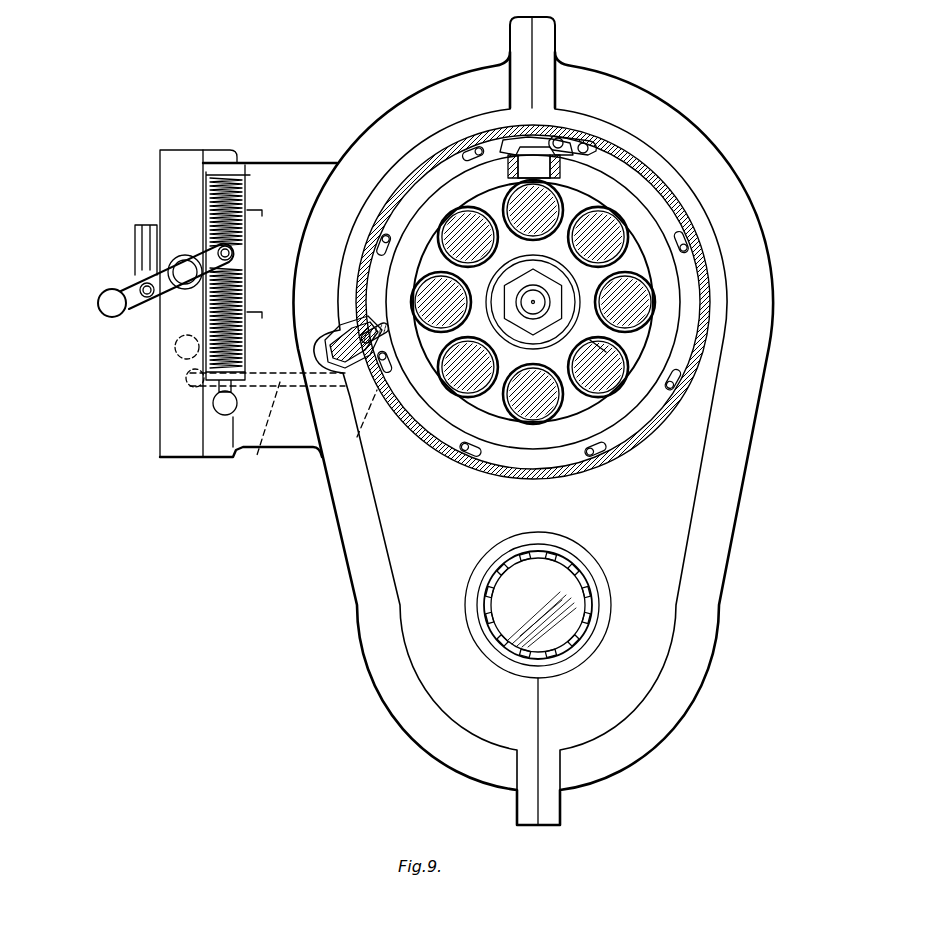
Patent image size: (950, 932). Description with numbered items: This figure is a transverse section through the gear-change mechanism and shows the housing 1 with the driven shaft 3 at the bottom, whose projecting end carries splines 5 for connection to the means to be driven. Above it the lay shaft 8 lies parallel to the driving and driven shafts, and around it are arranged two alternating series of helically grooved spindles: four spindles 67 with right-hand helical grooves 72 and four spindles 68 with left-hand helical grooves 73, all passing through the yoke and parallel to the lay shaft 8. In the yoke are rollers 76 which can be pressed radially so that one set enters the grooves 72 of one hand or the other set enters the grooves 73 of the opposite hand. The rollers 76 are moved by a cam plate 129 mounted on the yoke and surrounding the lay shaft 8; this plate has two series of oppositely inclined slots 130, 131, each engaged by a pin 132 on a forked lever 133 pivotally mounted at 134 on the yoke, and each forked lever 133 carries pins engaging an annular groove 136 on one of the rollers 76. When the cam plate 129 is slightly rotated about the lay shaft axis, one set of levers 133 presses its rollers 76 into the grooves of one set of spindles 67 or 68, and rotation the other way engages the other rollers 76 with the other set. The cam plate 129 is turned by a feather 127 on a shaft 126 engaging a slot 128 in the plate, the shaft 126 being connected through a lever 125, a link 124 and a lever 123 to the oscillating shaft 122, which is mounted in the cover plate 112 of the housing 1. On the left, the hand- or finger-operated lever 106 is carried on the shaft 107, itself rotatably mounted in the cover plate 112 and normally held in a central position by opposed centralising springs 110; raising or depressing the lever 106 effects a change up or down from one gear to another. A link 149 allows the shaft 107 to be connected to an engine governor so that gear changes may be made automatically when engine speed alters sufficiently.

The housing 1 is at (718, 530).
The driven shaft 3 is at (545, 640).
The splines 5 is at (594, 633).
The lay shaft 8 is at (538, 290).
The spindles 67 is at (462, 283).
The spindles 68 is at (463, 383).
The right-hand helical grooves 72 is at (560, 198).
The left-hand helical grooves 73 is at (600, 350).
The rollers 76 is at (534, 166).
The lever 106 is at (125, 312).
The shaft 107 is at (183, 262).
The centralising springs 110 is at (238, 196).
The cover plate 112 is at (184, 160).
The shaft 122 is at (178, 352).
The lever 123 is at (188, 380).
The link 124 is at (267, 432).
The lever 125 is at (362, 426).
The shaft 126 is at (337, 383).
The feather 127 is at (470, 343).
The slot 128 is at (362, 316).
The cam plate 129 is at (640, 190).
The slots 130 is at (690, 250).
The slots 131 is at (640, 170).
The pin 132 is at (598, 150).
The forked lever 133 is at (585, 142).
The pivot 134 is at (572, 135).
The annular groove 136 is at (513, 148).
The link 149 is at (140, 228).